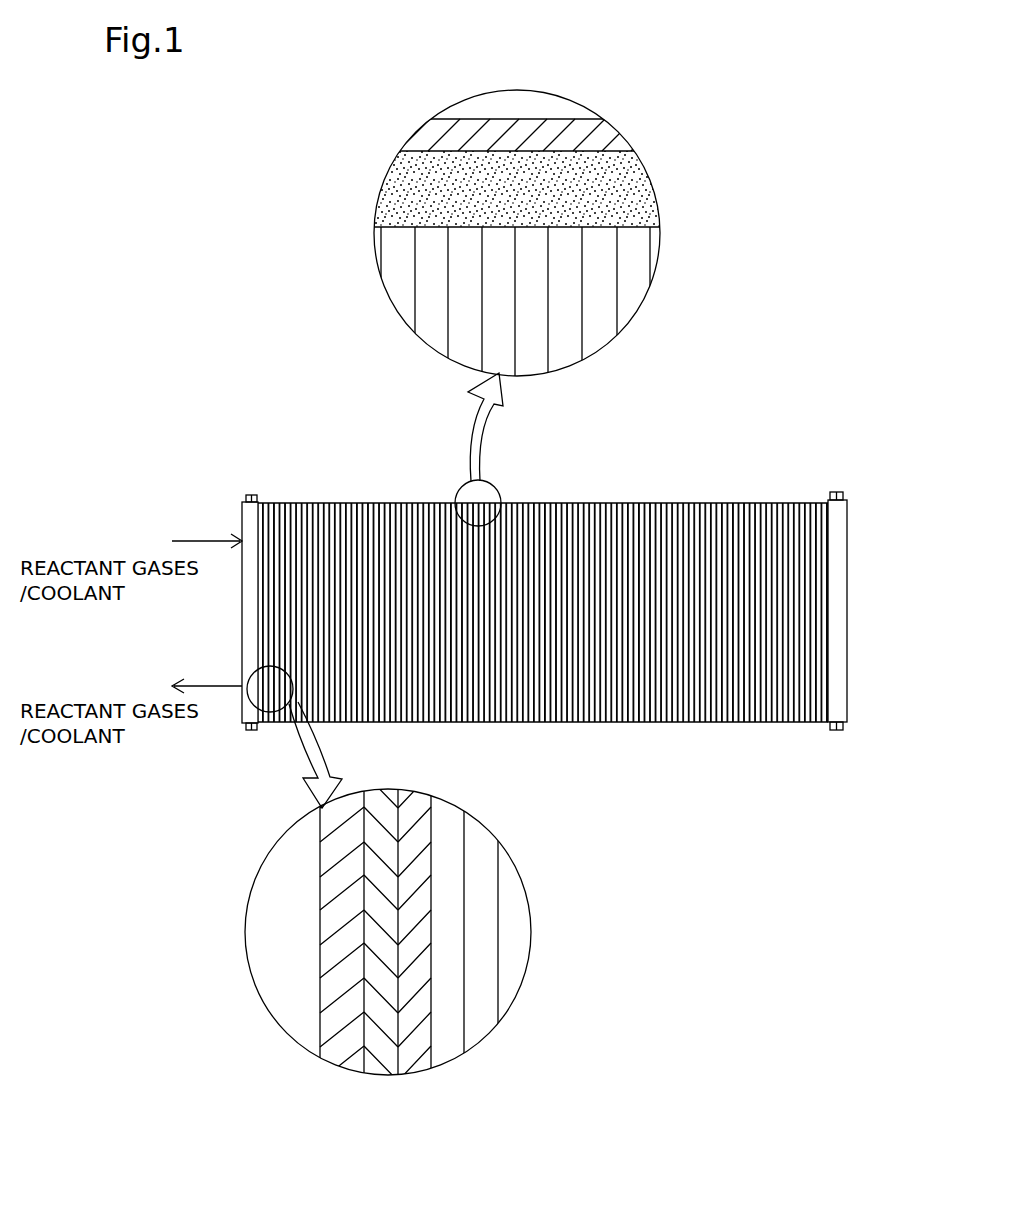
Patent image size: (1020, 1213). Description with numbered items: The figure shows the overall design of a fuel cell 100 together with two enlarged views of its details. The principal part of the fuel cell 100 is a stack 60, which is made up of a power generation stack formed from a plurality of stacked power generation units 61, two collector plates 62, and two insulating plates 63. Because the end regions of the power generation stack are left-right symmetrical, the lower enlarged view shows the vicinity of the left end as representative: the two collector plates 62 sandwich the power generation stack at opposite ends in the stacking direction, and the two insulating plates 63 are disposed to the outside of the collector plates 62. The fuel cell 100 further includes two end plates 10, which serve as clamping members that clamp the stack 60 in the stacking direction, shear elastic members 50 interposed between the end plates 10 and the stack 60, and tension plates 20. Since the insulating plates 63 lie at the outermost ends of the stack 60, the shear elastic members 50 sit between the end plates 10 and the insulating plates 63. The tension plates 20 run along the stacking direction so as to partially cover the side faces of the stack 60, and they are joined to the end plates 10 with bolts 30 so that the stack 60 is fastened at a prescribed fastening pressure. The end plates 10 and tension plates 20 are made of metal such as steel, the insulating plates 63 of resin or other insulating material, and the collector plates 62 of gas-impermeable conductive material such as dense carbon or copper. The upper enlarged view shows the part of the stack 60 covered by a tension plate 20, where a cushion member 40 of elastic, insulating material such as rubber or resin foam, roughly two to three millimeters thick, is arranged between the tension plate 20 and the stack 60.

The fuel cell 100 is at (540, 625).
The end plate 10 is at (249, 515).
The tension plate 20 is at (457, 130).
The bolt 30 is at (833, 731).
The cushion member 40 is at (636, 172).
The shear elastic member 50 is at (340, 808).
The stack 60 is at (494, 929).
The power generation unit 61 is at (636, 300).
The collector plate 62 is at (420, 921).
The insulating plate 63 is at (380, 978).